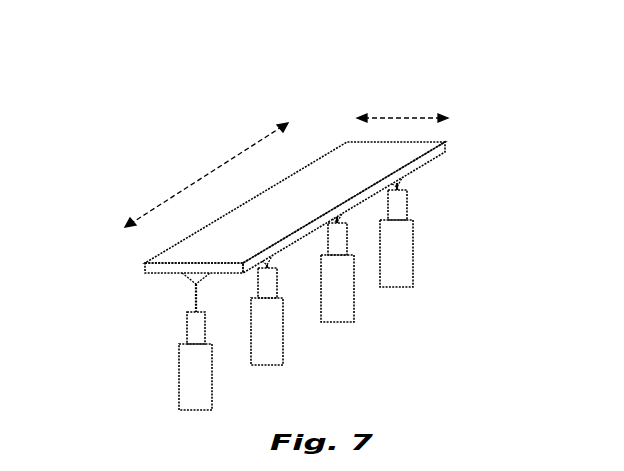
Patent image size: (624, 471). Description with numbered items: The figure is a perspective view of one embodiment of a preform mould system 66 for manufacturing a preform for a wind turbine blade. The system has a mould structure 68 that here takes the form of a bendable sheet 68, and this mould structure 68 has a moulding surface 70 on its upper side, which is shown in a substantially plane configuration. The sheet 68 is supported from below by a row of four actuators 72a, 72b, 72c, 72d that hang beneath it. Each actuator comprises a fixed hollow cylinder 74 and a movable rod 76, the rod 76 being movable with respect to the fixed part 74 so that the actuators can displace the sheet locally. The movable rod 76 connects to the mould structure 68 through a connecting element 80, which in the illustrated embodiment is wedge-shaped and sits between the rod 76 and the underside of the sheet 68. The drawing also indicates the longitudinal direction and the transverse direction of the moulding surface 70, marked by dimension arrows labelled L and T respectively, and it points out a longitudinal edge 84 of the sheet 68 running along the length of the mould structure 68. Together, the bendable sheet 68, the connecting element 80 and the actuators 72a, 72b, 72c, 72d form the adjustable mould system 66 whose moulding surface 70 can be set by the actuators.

The mould system 66 is at (345, 73).
The mould structure 68 is at (448, 143).
The moulding surface 70 is at (300, 216).
The longitudinal edge 84 is at (405, 171).
The connecting element 80 is at (147, 277).
The movable rod 76 is at (193, 302).
The fixed hollow cylinder 74 is at (195, 390).
The actuator 72a is at (185, 367).
The actuator 72b is at (277, 348).
The actuator 72c is at (343, 307).
The actuator 72d is at (408, 253).